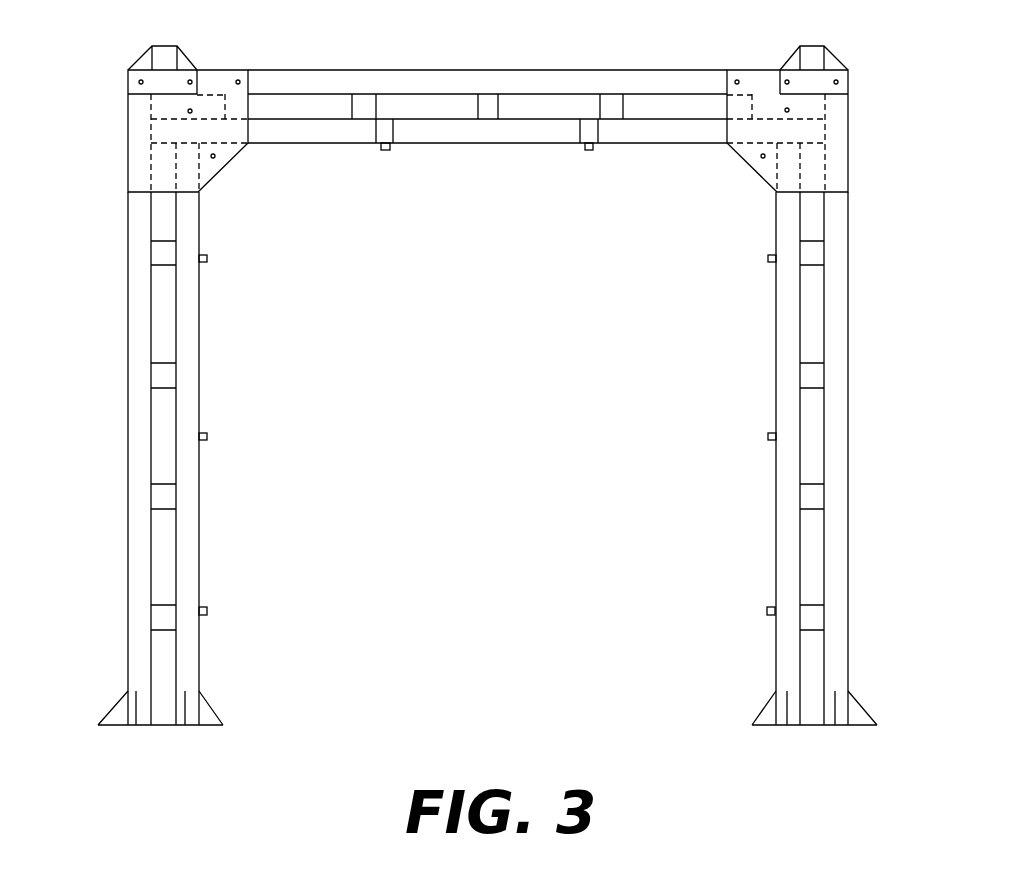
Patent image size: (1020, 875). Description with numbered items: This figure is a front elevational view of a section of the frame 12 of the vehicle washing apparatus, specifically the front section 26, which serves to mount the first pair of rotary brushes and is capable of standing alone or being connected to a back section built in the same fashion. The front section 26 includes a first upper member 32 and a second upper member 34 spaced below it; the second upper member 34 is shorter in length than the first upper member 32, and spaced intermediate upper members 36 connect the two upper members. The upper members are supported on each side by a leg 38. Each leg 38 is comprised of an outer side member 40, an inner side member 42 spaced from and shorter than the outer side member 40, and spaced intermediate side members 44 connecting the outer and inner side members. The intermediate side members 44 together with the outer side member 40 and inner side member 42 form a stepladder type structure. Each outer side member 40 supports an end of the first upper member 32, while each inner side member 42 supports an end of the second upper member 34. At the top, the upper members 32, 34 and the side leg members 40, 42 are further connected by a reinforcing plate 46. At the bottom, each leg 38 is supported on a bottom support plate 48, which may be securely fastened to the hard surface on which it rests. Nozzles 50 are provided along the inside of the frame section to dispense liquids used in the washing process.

The frame 12 is at (694, 55).
The front section 26 is at (325, 66).
The first upper member 32 is at (442, 78).
The second upper member 34 is at (428, 132).
The intermediate upper members 36 is at (358, 108).
The leg 38 is at (126, 326).
The outer side member 40 is at (137, 395).
The inner side member 42 is at (188, 403).
The intermediate side members 44 is at (161, 378).
The reinforcing plate 46 is at (837, 168).
The bottom support plate 48 is at (137, 153).
The nozzles 50 is at (588, 151).